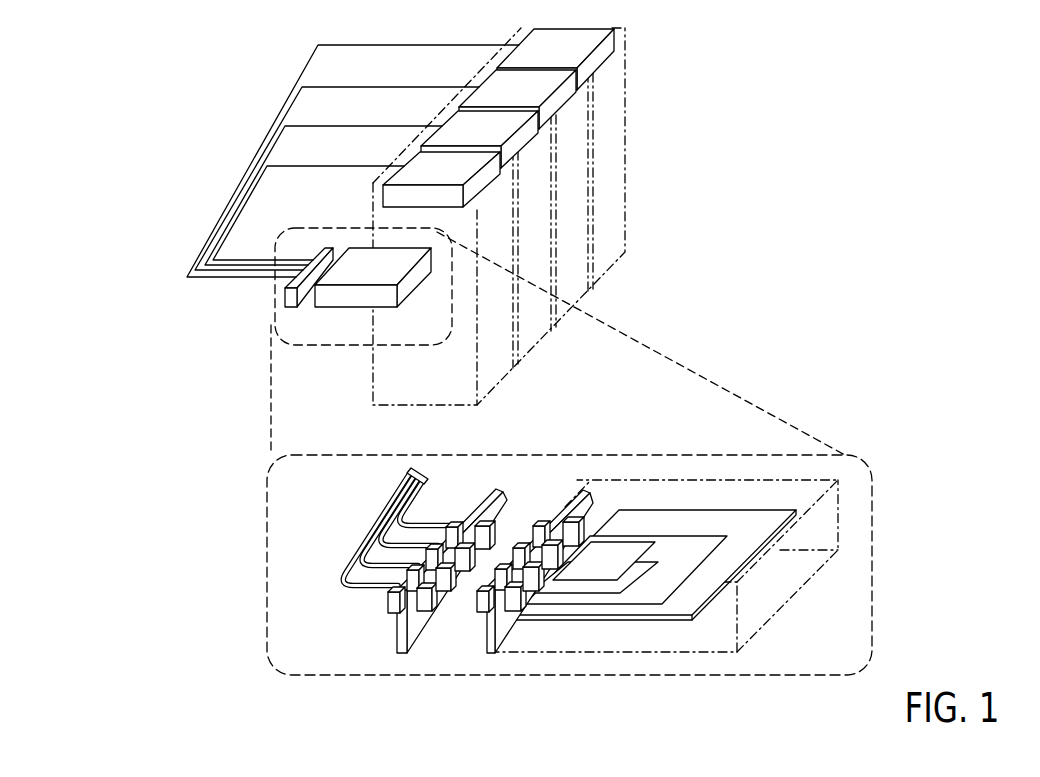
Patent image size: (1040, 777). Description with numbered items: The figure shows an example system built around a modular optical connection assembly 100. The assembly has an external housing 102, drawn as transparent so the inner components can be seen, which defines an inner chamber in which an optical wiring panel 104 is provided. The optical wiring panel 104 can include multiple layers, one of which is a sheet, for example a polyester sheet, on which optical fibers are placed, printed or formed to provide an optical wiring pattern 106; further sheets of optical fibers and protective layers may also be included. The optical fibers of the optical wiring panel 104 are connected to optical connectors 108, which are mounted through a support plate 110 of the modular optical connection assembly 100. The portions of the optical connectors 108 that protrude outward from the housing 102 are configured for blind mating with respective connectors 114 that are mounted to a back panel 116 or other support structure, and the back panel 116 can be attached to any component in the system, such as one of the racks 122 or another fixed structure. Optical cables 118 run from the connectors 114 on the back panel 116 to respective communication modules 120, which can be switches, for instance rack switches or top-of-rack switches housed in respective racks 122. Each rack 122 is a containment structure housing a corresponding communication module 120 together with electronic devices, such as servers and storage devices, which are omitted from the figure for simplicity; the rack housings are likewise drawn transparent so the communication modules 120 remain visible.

The modular optical connection assembly 100 is at (355, 302).
The external housing 102 is at (787, 601).
The optical wiring panel 104 is at (722, 567).
The optical wiring pattern 106 is at (585, 588).
The optical connectors 108 is at (519, 548).
The support plate 110 is at (487, 652).
The connectors 114 is at (431, 551).
The back panel 116 is at (287, 303).
The optical cables 118 is at (229, 194).
The communication modules 120 is at (462, 165).
The racks 122 is at (606, 258).